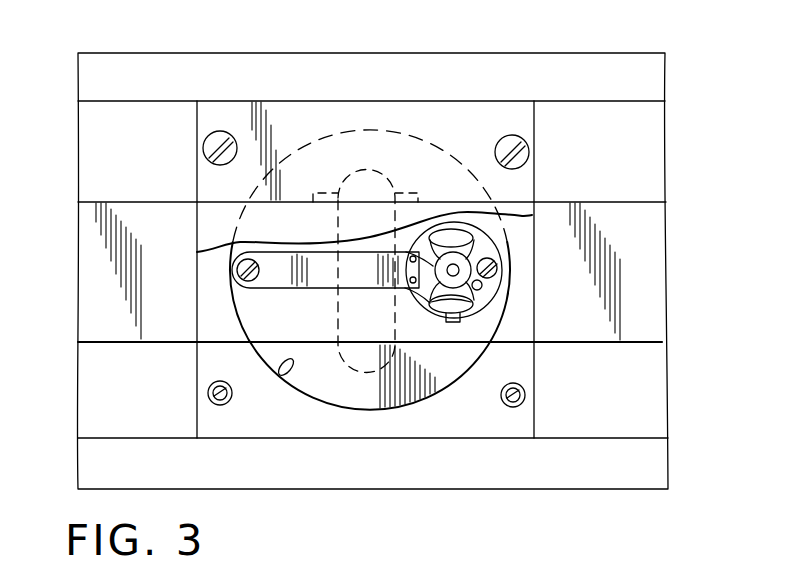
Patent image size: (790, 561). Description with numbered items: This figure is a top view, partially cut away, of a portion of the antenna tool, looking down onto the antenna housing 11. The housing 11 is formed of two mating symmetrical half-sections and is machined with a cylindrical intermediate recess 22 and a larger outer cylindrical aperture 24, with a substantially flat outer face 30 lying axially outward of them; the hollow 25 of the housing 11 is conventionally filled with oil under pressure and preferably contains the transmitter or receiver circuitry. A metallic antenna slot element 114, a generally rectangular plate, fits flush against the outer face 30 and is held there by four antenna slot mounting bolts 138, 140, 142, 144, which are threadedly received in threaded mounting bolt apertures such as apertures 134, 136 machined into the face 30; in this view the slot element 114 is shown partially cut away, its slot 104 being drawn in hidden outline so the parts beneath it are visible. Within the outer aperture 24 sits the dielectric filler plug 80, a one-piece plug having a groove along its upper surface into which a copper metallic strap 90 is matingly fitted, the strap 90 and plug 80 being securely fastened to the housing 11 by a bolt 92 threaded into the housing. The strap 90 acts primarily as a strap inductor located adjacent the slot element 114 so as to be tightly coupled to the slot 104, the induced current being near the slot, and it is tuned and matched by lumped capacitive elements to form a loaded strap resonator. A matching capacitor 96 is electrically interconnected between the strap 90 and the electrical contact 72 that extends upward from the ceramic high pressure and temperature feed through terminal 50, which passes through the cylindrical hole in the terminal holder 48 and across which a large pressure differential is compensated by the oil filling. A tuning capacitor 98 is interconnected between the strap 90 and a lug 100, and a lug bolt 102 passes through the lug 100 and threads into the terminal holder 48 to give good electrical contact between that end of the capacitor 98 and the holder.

The antenna housing 11 is at (441, 470).
The intermediate recess 22 is at (422, 298).
The outer cylindrical aperture 24 is at (290, 362).
The hollow 25 is at (640, 239).
The outer face 30 is at (487, 418).
The terminal holder 48 is at (447, 306).
The ceramic feed through terminal 50 is at (463, 283).
The electrical contact 72 is at (458, 266).
The filler plug 80 is at (264, 360).
The metallic strap 90 is at (283, 272).
The bolt 92 is at (237, 263).
The matching capacitor 96 is at (451, 240).
The tuning capacitor 98 is at (456, 310).
The lug 100 is at (483, 286).
The lug bolt 102 is at (495, 262).
The slot 104 is at (374, 190).
The antenna slot element 114 is at (368, 122).
The mounting bolt aperture 134 is at (524, 394).
The mounting bolt aperture 136 is at (209, 391).
The antenna slot mounting bolt 138 is at (211, 141).
The antenna slot mounting bolt 140 is at (518, 141).
The antenna slot mounting bolt 142 is at (520, 400).
The antenna slot mounting bolt 144 is at (216, 399).